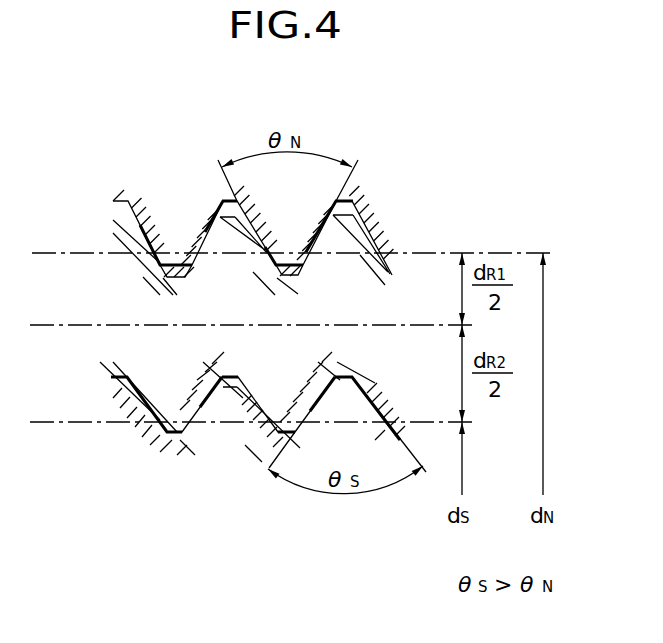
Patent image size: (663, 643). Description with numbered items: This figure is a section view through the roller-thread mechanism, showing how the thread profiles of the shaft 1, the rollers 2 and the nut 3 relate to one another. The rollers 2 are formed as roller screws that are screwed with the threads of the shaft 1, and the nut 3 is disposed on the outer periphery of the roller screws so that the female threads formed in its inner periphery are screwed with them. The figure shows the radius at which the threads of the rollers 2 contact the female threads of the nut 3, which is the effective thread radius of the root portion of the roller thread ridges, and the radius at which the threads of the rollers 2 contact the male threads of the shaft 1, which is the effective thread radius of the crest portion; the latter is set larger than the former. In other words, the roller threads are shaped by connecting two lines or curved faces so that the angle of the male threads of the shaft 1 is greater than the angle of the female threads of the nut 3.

The shaft 1 is at (153, 453).
The rollers 2 is at (122, 271).
The nut 3 is at (145, 197).